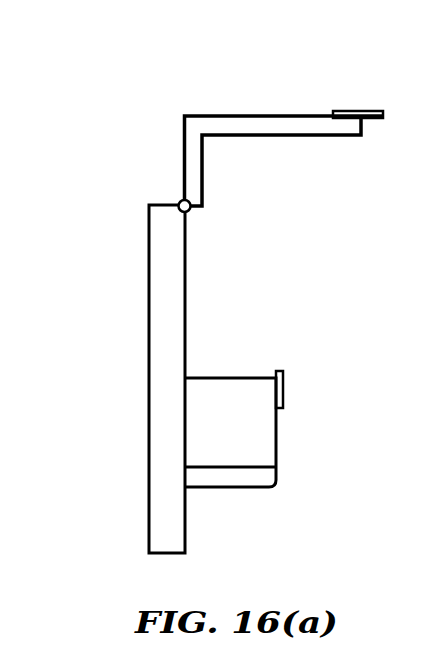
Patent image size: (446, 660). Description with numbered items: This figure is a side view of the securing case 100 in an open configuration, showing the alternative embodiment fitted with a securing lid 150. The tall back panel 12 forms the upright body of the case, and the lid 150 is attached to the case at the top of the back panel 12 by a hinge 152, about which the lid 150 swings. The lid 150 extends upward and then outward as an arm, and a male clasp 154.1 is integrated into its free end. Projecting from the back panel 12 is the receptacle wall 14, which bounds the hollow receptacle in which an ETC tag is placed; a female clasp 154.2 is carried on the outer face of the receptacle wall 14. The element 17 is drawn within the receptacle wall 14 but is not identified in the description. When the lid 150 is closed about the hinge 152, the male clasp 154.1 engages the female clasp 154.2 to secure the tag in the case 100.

The securing case 100 is at (100, 208).
The back panel 12 is at (148, 505).
The receptacle wall 14 is at (277, 437).
The interface layer 17 is at (277, 477).
The securing lid 150 is at (262, 114).
The hinge 152 is at (189, 211).
The male clasp 154.1 is at (350, 111).
The female clasp 154.2 is at (283, 391).